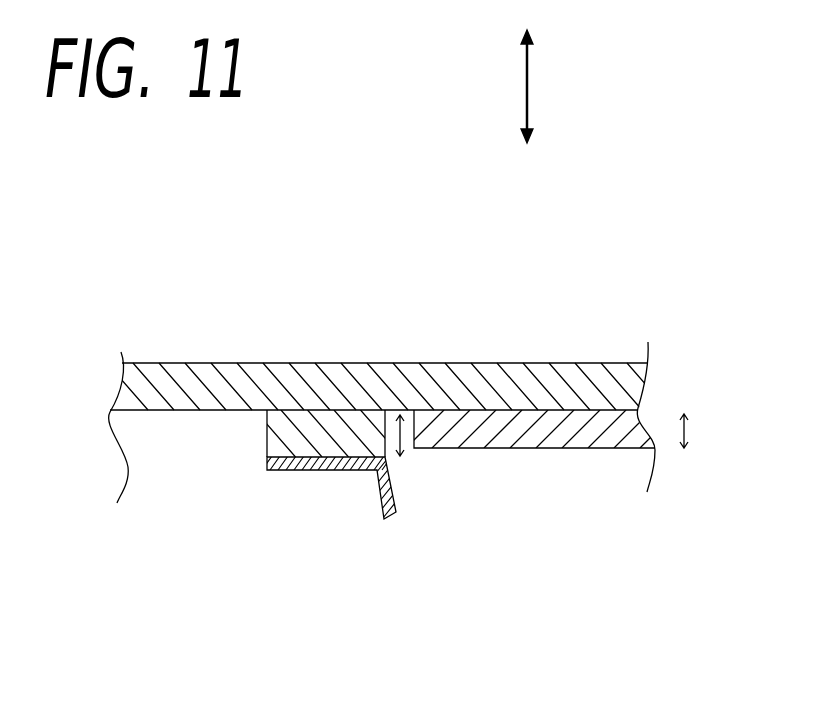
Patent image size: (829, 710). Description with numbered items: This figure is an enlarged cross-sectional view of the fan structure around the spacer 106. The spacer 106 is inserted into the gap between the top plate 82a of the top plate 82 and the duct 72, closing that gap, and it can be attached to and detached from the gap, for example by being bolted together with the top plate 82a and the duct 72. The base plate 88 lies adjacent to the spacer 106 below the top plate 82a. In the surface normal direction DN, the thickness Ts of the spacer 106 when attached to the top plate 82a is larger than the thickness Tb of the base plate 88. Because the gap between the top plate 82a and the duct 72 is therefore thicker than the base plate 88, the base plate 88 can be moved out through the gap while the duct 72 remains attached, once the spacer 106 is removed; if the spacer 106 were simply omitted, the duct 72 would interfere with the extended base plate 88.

The top plate 82 is at (600, 370).
The top plate 82a is at (470, 390).
The spacer 106 is at (330, 425).
The base plate 88 is at (585, 449).
The duct 72 is at (379, 490).
The thickness of the spacer Ts is at (404, 455).
The thickness of the base plate Tb is at (690, 432).
The surface normal direction DN is at (529, 87).